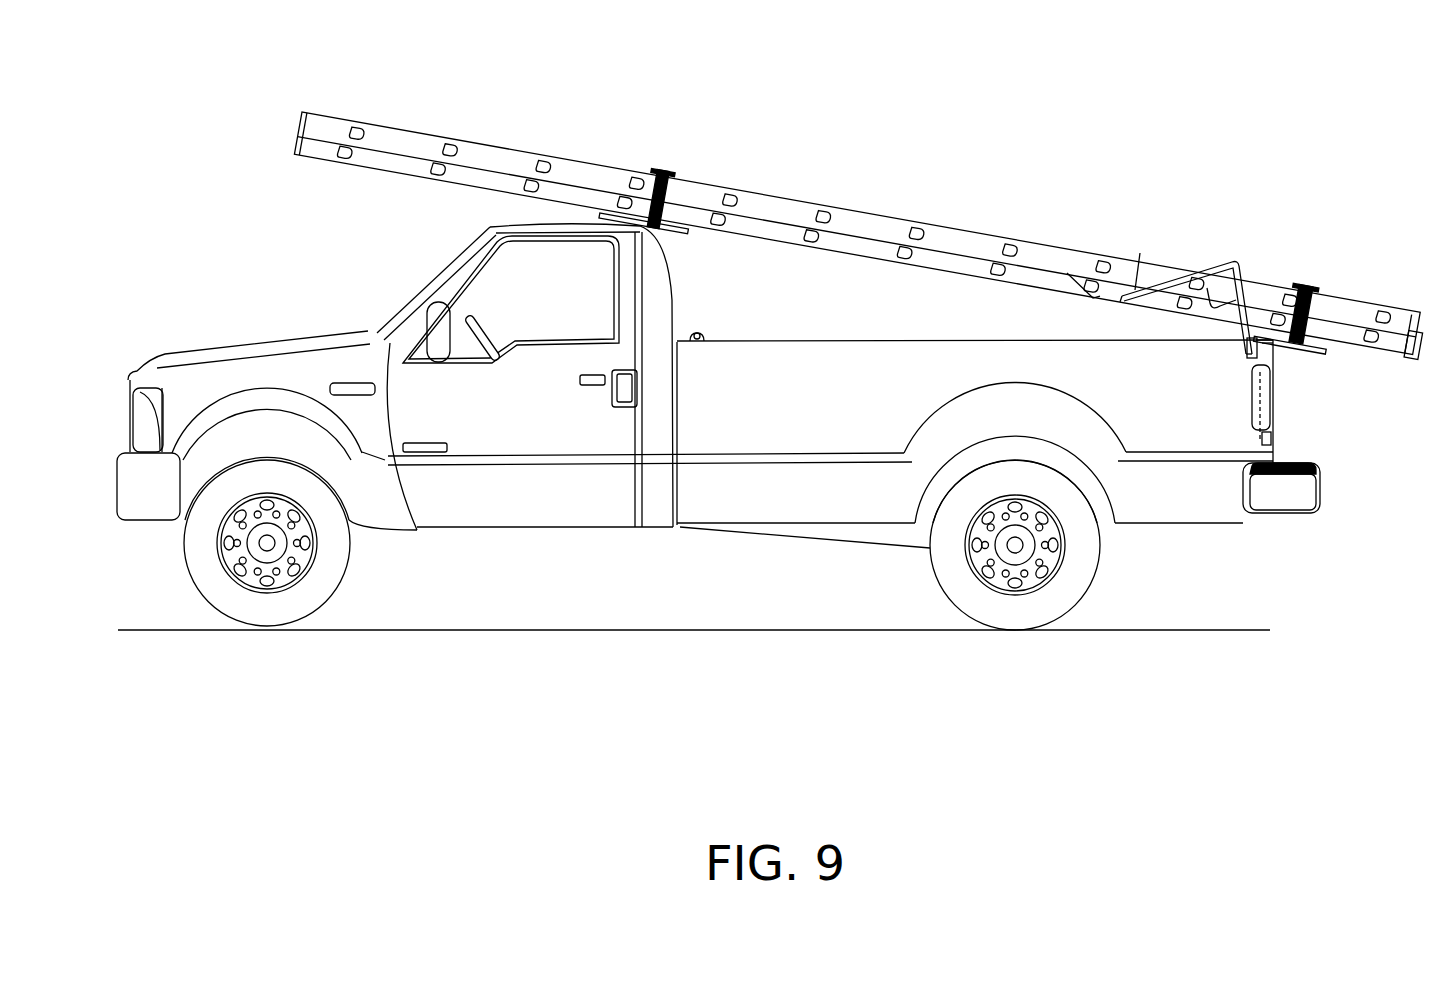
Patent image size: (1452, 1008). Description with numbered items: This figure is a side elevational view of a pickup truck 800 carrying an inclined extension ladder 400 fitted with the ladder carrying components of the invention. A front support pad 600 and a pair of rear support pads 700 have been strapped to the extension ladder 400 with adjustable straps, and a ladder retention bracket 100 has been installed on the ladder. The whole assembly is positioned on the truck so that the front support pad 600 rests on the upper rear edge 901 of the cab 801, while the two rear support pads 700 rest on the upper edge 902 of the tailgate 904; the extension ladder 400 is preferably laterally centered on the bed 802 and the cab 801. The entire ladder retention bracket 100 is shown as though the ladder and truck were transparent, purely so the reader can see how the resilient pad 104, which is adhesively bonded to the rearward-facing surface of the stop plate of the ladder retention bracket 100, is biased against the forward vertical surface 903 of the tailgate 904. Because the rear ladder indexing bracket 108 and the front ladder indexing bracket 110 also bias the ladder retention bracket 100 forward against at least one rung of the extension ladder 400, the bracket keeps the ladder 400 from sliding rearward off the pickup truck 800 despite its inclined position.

The ladder retention bracket 100 is at (1217, 250).
The resilient pad 104 is at (1272, 352).
The rear ladder indexing bracket 108 is at (1222, 268).
The front ladder indexing bracket 110 is at (1077, 268).
The extension ladder 400 is at (300, 108).
The front support pad 600 is at (594, 216).
The rear support pad 700 is at (1320, 352).
The pickup truck 800 is at (338, 298).
The cab 801 is at (675, 284).
The bed 802 is at (975, 411).
The upper rear edge 901 is at (668, 238).
The upper edge 902 is at (1280, 344).
The forward vertical surface 903 is at (1247, 358).
The tailgate 904 is at (1272, 438).